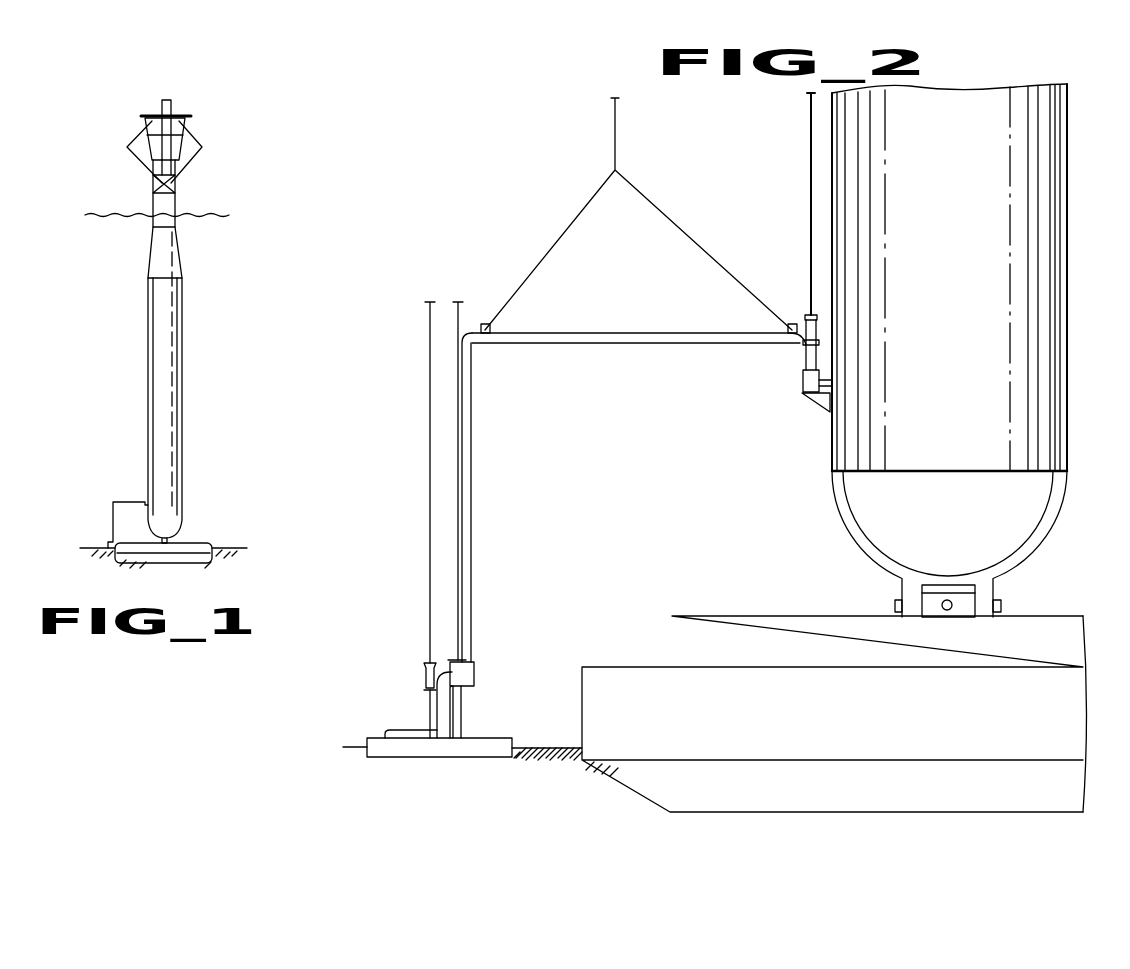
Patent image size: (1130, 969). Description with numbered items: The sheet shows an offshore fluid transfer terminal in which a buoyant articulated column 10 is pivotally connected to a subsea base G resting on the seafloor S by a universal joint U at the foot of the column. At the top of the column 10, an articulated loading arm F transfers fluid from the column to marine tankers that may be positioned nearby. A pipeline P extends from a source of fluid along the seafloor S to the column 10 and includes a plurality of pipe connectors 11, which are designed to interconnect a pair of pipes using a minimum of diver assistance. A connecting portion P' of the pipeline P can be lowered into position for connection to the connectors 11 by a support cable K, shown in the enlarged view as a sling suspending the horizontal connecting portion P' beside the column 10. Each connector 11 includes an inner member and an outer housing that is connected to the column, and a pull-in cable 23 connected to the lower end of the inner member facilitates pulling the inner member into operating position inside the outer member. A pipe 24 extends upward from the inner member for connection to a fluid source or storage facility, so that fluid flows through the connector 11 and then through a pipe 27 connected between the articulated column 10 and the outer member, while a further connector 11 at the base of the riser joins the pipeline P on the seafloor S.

In FIG. 1, the buoyant articulated column 10 is at (183, 358).
In FIG. 2, the buoyant articulated column 10 is at (962, 207).
In FIG. 2, the pipe connector 11 is at (805, 380).
In FIG. 2, the pull-in cable 23 is at (808, 155).
In FIG. 2, the pipe 24 is at (805, 362).
In FIG. 2, the pipe 27 is at (822, 384).
In FIG. 1, the articulated loading arm F is at (197, 138).
In FIG. 2, the support cable K is at (615, 123).
In FIG. 1, the pipeline P is at (70, 527).
In FIG. 2, the pipeline P is at (427, 529).
In FIG. 1, the connecting portion of the pipeline P' is at (112, 499).
In FIG. 2, the connecting portion of the pipeline P' is at (634, 477).
In FIG. 1, the universal joint U is at (172, 540).
In FIG. 2, the universal joint U is at (933, 603).
In FIG. 1, the subsea base G is at (197, 543).
In FIG. 2, the subsea base G is at (958, 724).
In FIG. 1, the seafloor S is at (233, 549).
In FIG. 2, the seafloor S is at (542, 745).